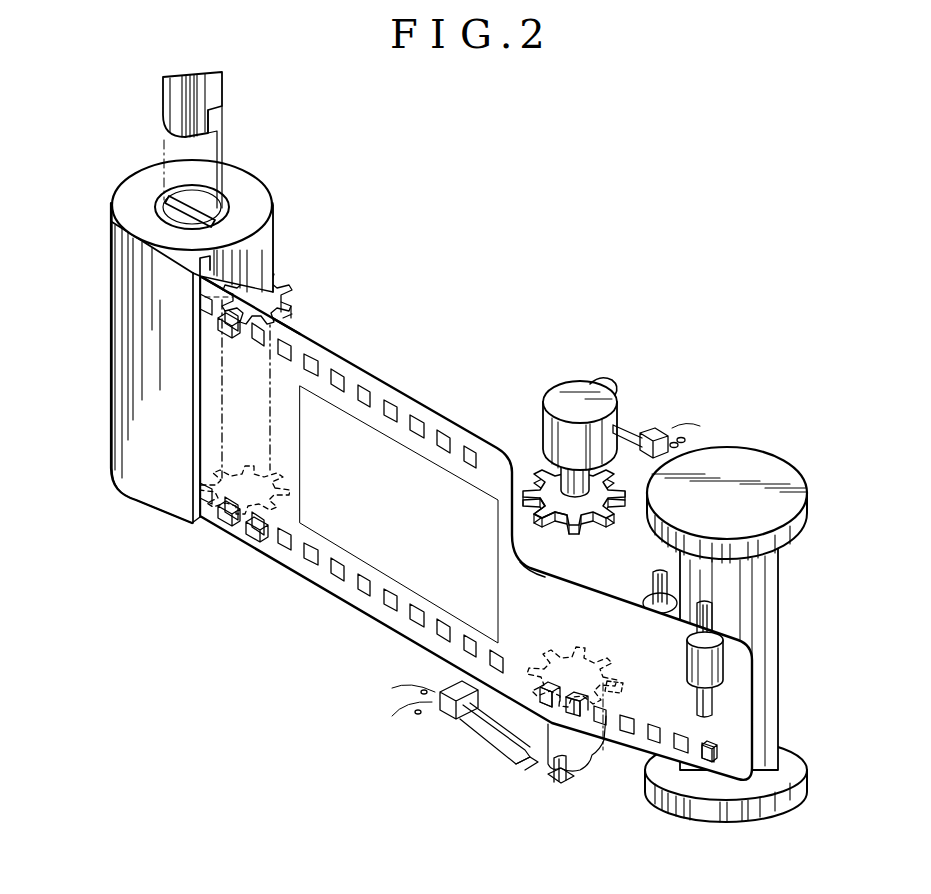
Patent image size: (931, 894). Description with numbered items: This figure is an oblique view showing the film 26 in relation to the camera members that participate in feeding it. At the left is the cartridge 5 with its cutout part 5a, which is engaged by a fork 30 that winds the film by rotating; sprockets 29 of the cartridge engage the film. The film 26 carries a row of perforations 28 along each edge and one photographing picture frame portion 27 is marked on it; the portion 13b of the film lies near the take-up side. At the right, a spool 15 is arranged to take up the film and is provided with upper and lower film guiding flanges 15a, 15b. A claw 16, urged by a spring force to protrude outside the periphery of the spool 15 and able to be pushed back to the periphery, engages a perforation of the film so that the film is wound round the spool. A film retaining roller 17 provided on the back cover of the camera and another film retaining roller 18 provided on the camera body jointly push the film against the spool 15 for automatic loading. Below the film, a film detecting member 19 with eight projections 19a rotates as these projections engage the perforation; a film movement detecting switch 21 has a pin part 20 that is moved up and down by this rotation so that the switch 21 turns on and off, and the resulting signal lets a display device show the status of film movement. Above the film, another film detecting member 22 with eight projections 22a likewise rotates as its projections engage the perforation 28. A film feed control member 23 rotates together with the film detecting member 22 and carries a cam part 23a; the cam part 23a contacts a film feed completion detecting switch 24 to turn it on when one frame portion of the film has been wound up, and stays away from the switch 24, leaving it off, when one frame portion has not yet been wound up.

The cartridge 5 is at (192, 361).
The cutout part 5a is at (224, 211).
The fork 30 is at (218, 90).
The sprockets 29 is at (280, 292).
The film 26 is at (287, 378).
The perforation 28 is at (314, 362).
The photographing picture frame portion 27 is at (400, 440).
The film feed control member 23 is at (584, 431).
The cam part 23a is at (614, 380).
The film feed completion detecting switch 24 is at (664, 438).
The film detecting member 22 is at (571, 514).
The projections 22a is at (562, 519).
The film leader portion 13b is at (583, 597).
The film retaining roller 18 is at (653, 596).
The spool 15 is at (727, 703).
The film guiding flange 15a is at (795, 538).
The film guiding flange 15b is at (778, 815).
The film retaining roller 17 is at (718, 663).
The film detecting member 19 is at (586, 685).
The projections 19a is at (618, 668).
The film movement detecting switch 21 is at (454, 712).
The pin part 20 is at (545, 765).
The claw 16 is at (702, 768).